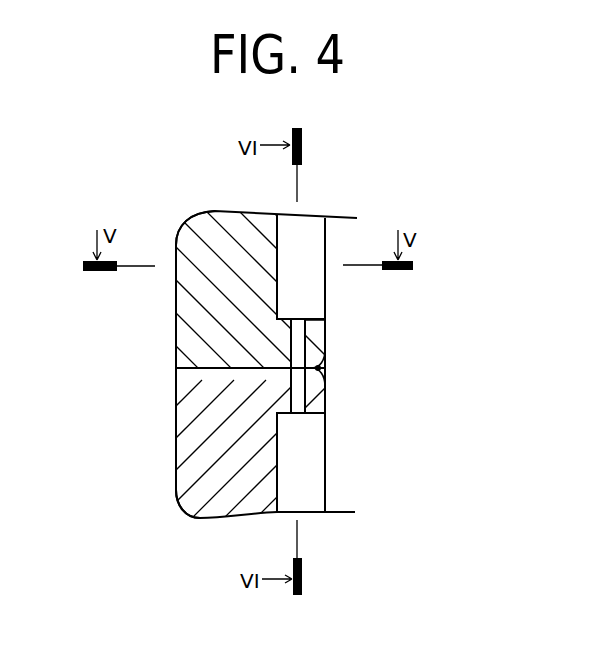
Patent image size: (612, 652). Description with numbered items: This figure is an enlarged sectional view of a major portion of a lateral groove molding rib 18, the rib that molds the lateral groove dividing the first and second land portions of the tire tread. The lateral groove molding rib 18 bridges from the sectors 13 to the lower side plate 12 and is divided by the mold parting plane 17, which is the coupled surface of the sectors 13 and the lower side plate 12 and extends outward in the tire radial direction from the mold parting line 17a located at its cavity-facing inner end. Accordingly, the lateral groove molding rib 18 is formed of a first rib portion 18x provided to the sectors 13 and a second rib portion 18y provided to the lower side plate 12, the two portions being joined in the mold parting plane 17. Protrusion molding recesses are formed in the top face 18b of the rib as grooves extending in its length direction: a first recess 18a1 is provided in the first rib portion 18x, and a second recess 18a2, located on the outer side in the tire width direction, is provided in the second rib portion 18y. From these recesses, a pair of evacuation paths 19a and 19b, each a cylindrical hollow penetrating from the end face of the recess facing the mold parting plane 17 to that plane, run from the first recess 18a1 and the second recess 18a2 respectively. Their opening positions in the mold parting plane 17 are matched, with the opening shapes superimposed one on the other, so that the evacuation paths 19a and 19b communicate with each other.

The lateral groove molding rib 18 is at (247, 333).
The first rib portion 18x is at (188, 241).
The second rib portion 18y is at (200, 497).
The first recess 18a1 is at (302, 265).
The second recess 18a2 is at (305, 442).
The top face 18b is at (328, 494).
The sectors 13 is at (185, 325).
The lower side plate 12 is at (188, 448).
The mold parting plane 17 is at (200, 370).
The mold parting line 17a is at (320, 368).
The evacuation path 19a is at (303, 343).
The evacuation path 19b is at (320, 396).